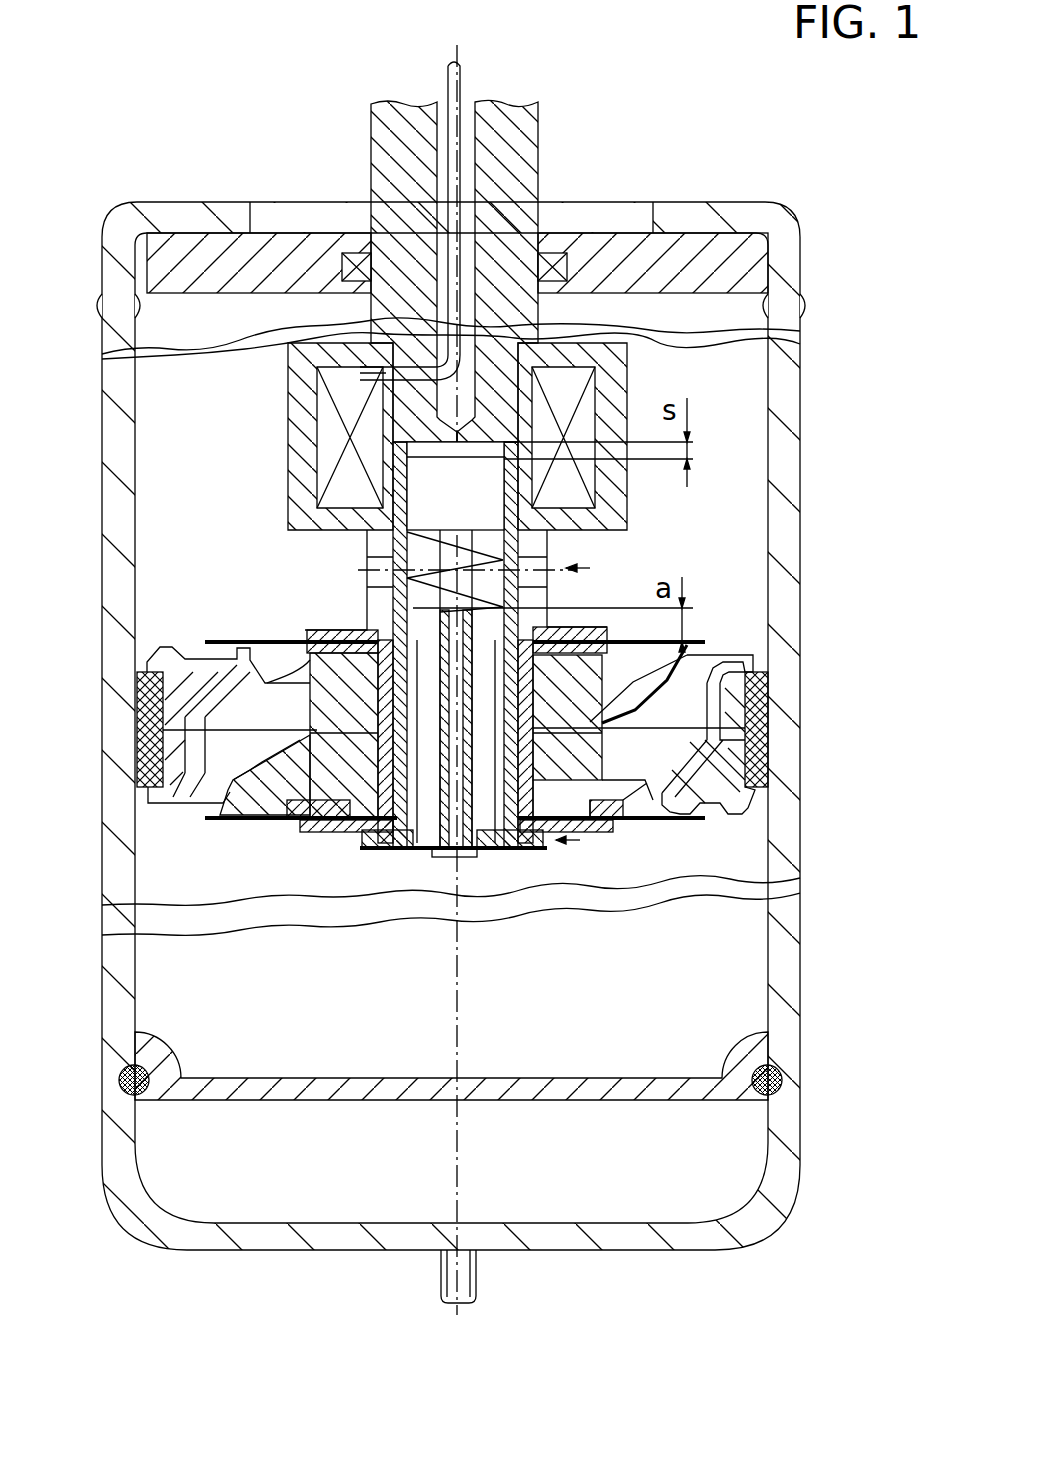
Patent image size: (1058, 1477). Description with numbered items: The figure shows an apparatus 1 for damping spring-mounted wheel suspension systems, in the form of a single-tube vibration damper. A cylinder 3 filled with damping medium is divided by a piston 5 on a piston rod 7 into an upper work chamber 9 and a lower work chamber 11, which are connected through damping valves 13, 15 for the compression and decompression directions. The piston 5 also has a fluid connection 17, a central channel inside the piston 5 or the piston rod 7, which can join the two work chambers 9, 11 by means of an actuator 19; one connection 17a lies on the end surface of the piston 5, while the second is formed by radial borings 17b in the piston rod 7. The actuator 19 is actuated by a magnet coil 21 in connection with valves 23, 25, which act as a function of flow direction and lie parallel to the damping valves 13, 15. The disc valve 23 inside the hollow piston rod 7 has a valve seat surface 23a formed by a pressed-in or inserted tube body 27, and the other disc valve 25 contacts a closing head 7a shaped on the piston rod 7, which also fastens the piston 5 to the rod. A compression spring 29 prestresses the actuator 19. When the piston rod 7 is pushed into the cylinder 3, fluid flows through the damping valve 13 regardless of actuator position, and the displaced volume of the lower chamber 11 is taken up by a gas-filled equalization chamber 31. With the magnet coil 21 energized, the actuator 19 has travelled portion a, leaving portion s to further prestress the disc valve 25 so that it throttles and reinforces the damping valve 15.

The apparatus 1 is at (829, 1020).
The cylinder 3 is at (785, 498).
The piston 5 is at (743, 800).
The piston rod 7 is at (528, 140).
The closing head 7a is at (517, 846).
The upper work chamber 9 is at (735, 310).
The lower work chamber 11 is at (752, 973).
The damping valve 13 is at (222, 630).
The damping valve 15 is at (764, 878).
The fluid connection 17 is at (477, 808).
The connection 17a is at (566, 841).
The radial borings 17b is at (577, 568).
The actuator 19 is at (430, 808).
The magnet coil 21 is at (587, 412).
The disc valve 23 is at (397, 613).
The valve seat surface 23a is at (405, 603).
The disc valve 25 is at (525, 838).
The tube body 27 is at (373, 850).
The compression spring 29 is at (423, 545).
The equalization chamber 31 is at (738, 1175).